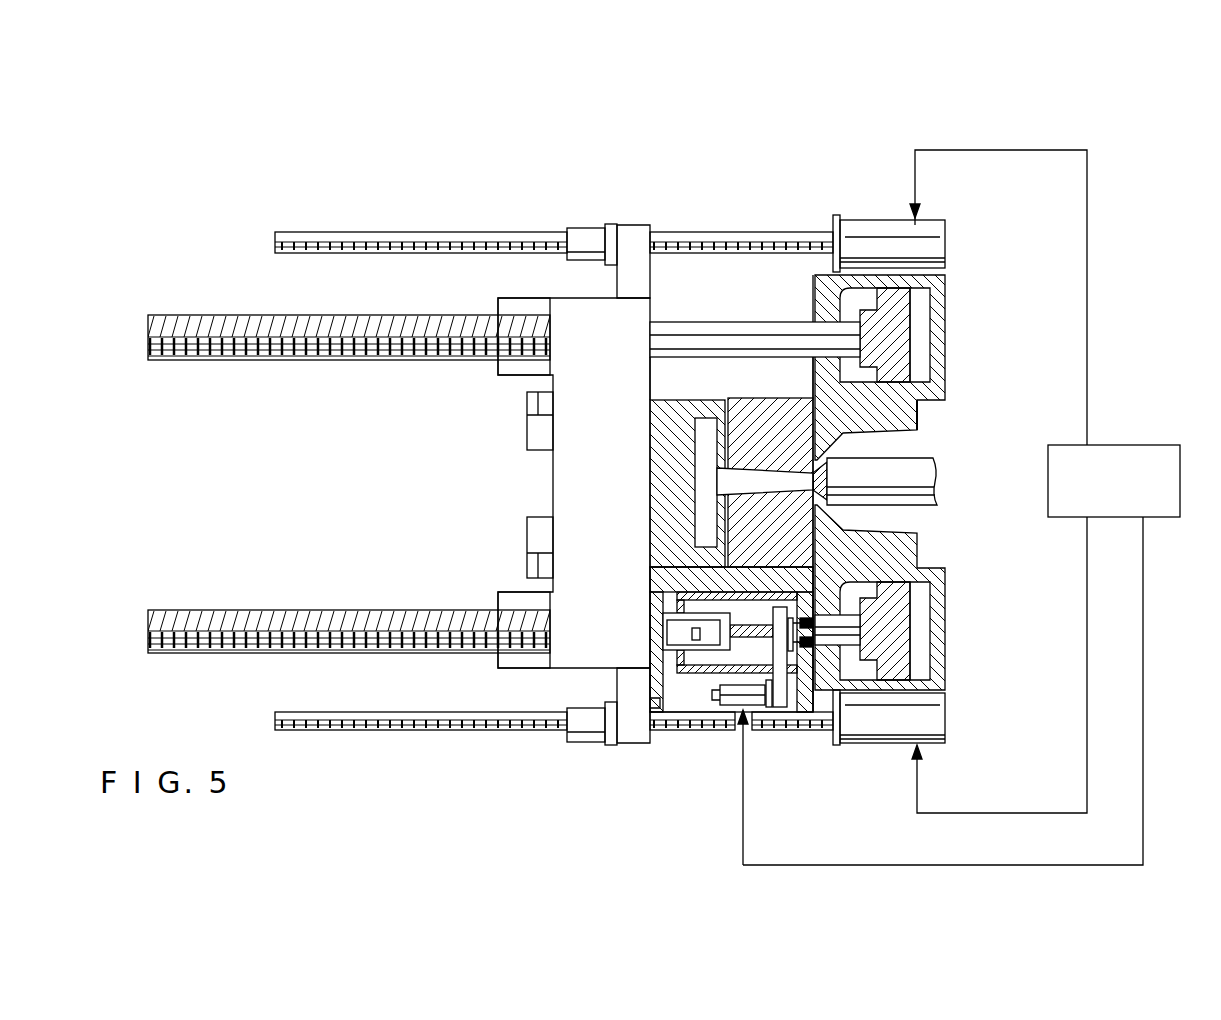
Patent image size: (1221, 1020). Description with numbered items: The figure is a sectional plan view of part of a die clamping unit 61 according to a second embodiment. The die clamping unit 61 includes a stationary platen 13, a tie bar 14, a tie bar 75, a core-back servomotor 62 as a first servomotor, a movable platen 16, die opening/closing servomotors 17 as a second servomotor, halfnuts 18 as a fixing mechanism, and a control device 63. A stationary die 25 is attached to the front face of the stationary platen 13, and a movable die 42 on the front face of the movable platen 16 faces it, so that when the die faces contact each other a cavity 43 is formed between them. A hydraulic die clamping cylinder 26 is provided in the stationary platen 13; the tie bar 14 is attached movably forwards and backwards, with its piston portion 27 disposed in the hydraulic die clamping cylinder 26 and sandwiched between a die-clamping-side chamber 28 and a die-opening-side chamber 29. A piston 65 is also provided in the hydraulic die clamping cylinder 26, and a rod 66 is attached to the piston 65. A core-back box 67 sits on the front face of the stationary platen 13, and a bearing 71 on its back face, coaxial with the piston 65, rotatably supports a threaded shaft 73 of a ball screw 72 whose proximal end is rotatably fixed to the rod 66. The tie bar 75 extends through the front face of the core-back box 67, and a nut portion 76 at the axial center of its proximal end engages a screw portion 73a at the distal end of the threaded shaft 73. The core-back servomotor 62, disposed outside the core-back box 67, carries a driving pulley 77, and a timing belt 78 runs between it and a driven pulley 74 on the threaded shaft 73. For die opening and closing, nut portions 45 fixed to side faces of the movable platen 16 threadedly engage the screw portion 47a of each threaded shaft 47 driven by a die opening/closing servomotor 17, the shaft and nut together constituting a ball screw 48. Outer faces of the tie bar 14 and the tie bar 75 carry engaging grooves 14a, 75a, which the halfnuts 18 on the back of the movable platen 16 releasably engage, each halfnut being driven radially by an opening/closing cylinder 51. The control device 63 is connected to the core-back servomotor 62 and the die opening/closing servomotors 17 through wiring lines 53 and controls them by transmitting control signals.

The stationary platen 13 is at (852, 277).
The tie bar 14 is at (705, 337).
The engaging groove 14a is at (228, 330).
The movable platen 16 is at (580, 668).
The die opening/closing servomotor 17 is at (858, 222).
The halfnut 18 is at (505, 378).
The stationary die 25 is at (760, 428).
The hydraulic die clamping cylinder 26 is at (925, 405).
The piston portion 27 is at (905, 300).
The die-clamping-side chamber 28 is at (822, 299).
The die-opening-side chamber 29 is at (925, 355).
The movable die 42 is at (668, 412).
The cavity 43 is at (702, 428).
The nut portion 45 is at (582, 240).
The threaded shaft 47 is at (800, 240).
The screw portion 47a is at (458, 240).
The ball screw 48 is at (634, 208).
The opening/closing cylinder 51 is at (530, 446).
The wiring line 53 is at (1088, 276).
The die clamping unit 61 is at (649, 102).
The core-back servomotor 62 is at (733, 742).
The control device 63 is at (1158, 443).
The piston 65 is at (900, 665).
The rod 66 is at (912, 632).
The core-back box 67 is at (656, 700).
The bearing 71 is at (843, 592).
The ball screw 72 is at (744, 603).
The threaded shaft 73 is at (757, 710).
The screw portion 73a is at (702, 712).
The driven pulley 74 is at (778, 604).
The tie bar 75 is at (664, 632).
The engaging groove 75a is at (230, 622).
The nut portion 76 is at (680, 604).
The driving pulley 77 is at (782, 714).
The timing belt 78 is at (810, 714).